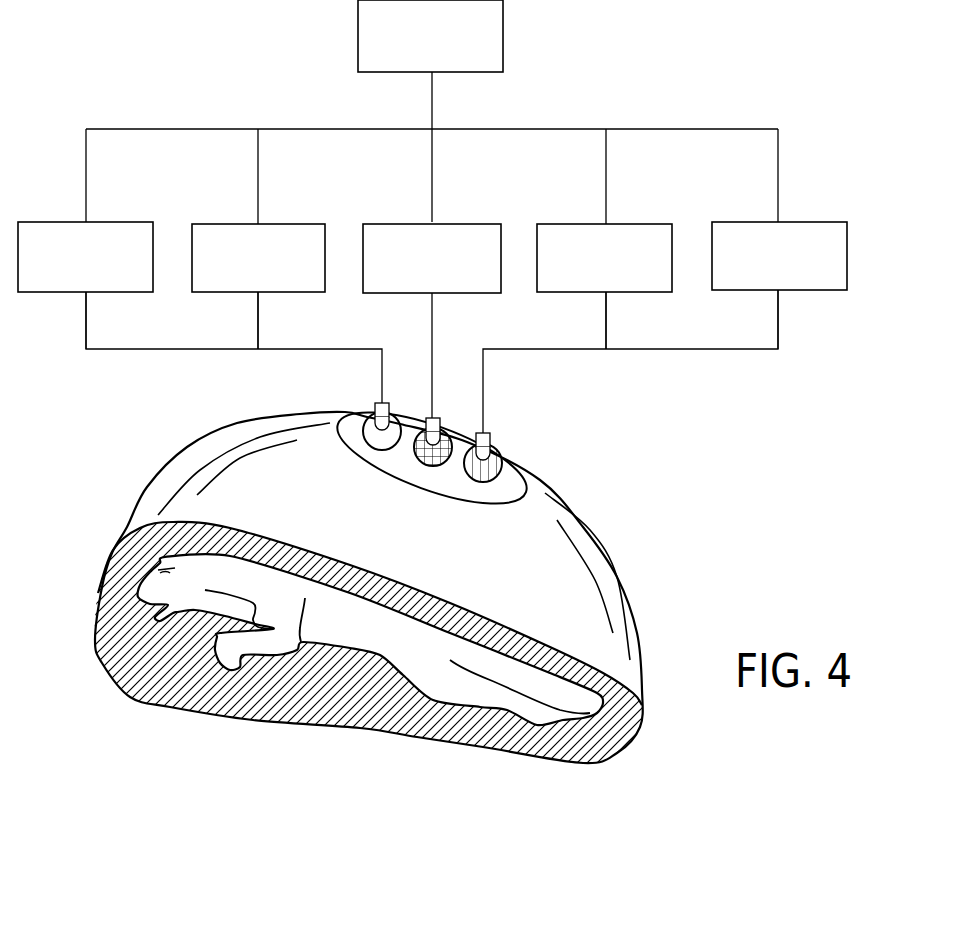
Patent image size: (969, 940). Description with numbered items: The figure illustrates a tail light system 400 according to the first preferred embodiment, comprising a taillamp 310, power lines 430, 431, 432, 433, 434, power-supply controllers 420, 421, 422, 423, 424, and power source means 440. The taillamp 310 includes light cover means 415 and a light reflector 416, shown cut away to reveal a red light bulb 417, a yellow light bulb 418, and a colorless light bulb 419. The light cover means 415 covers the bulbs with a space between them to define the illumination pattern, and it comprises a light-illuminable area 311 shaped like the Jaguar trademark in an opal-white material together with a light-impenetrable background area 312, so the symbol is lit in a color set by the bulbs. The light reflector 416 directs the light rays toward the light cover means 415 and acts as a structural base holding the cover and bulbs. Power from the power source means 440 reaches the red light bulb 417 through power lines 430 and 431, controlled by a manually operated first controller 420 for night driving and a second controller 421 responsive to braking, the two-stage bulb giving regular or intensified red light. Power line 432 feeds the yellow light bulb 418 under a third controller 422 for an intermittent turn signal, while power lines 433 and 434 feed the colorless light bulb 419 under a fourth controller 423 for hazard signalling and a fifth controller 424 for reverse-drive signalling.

The tail light system 400 is at (782, 498).
The power source means 440 is at (503, 50).
The fifth controller 424 is at (130, 222).
The fourth controller 423 is at (304, 224).
The third controller 422 is at (474, 224).
The second controller 421 is at (650, 224).
The first controller 420 is at (810, 222).
The power line 434 is at (86, 324).
The power line 433 is at (258, 324).
The power line 432 is at (432, 324).
The power line 431 is at (606, 324).
The power line 430 is at (778, 324).
The colorless light bulb 419 is at (380, 410).
The yellow light bulb 418 is at (442, 430).
The red light bulb 417 is at (491, 435).
The taillamp 310 is at (146, 459).
The light cover means 415 is at (94, 630).
The light reflector 416 is at (618, 566).
The light-illuminable area 311 is at (460, 690).
The light-impenetrable background area 312 is at (597, 746).